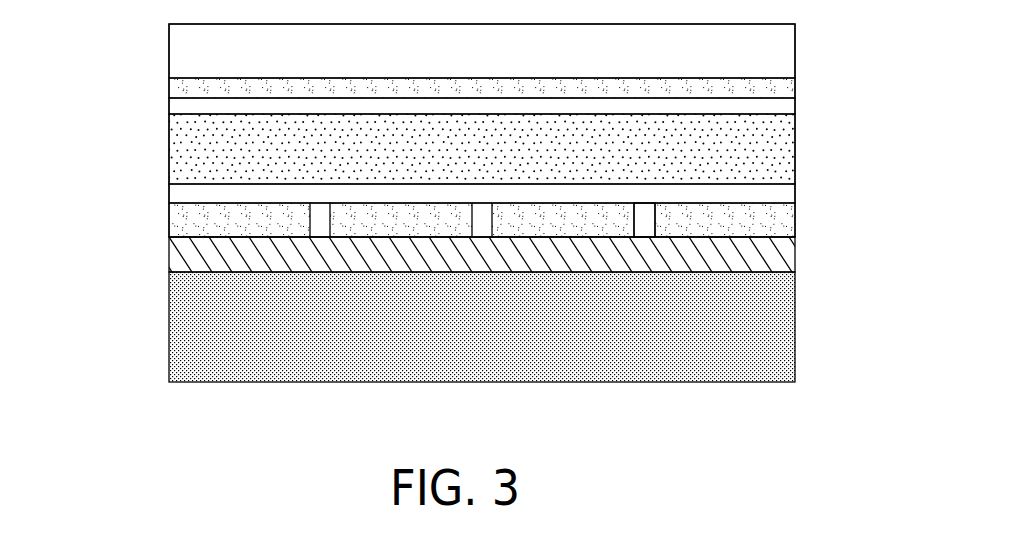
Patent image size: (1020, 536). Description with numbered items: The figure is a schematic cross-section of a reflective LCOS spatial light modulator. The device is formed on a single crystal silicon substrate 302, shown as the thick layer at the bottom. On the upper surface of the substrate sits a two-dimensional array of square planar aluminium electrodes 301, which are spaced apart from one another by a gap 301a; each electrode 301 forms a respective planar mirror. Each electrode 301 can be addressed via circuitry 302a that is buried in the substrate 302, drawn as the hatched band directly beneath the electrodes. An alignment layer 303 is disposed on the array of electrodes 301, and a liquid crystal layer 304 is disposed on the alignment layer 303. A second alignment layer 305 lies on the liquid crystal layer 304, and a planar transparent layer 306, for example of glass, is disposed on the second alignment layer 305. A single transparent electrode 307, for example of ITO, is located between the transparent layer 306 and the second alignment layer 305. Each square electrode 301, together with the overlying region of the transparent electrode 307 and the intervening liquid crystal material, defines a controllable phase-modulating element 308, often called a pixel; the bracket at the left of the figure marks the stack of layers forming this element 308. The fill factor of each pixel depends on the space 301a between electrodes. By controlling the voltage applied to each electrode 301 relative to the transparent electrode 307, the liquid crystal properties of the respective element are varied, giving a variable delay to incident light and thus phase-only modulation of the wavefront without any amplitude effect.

The square planar aluminium electrodes 301 is at (770, 218).
The gap 301a is at (640, 218).
The single crystal silicon substrate 302 is at (168, 347).
The circuitry 302a is at (168, 262).
The alignment layer 303 is at (777, 194).
The liquid crystal layer 304 is at (773, 150).
The second alignment layer 305 is at (778, 107).
The planar transparent layer 306 is at (768, 50).
The transparent electrode 307 is at (776, 89).
The phase-modulating element 308 is at (150, 24).